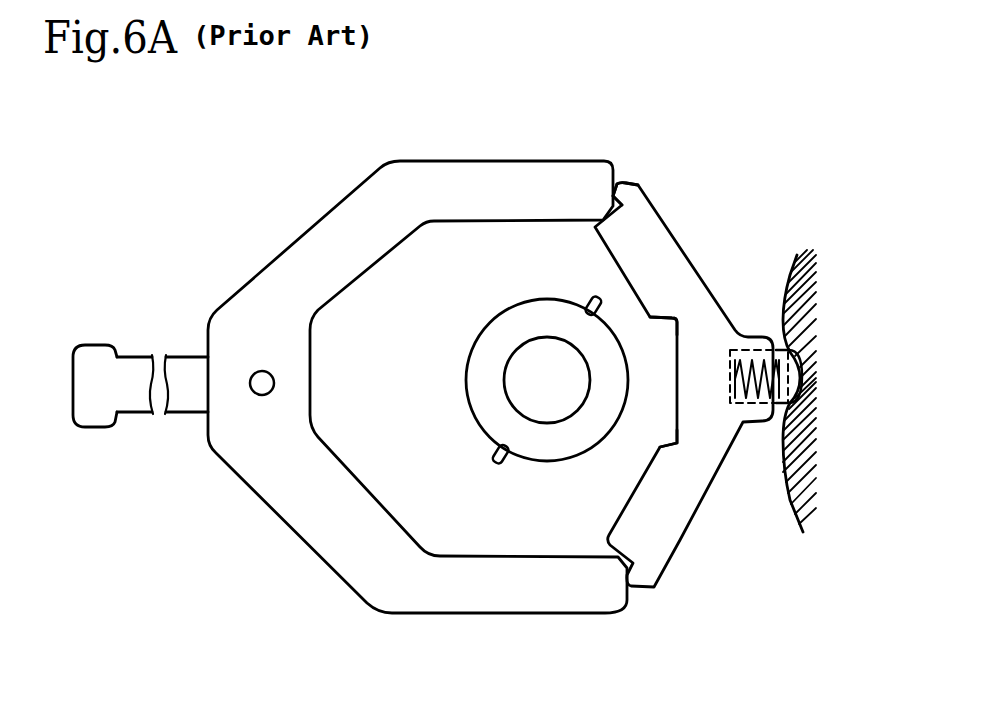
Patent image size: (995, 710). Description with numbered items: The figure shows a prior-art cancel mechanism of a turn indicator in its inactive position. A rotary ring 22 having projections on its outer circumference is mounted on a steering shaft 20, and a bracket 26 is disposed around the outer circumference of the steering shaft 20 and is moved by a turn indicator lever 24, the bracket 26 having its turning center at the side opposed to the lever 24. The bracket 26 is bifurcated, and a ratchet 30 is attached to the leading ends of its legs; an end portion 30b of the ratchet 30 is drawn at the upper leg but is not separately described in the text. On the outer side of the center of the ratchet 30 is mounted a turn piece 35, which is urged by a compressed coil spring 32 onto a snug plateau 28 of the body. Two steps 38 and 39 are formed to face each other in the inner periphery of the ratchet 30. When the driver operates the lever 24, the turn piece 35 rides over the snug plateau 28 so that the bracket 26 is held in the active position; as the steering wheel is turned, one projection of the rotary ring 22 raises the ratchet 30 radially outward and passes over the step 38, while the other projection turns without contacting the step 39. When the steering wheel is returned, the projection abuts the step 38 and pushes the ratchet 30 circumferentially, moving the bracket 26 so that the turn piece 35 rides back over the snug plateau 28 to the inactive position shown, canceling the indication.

The steering shaft 20 is at (557, 410).
The rotary ring 22 is at (484, 432).
The turn indicator lever 24 is at (105, 345).
The bracket 26 is at (588, 160).
The snug plateau 28 is at (784, 462).
The ratchet 30 is at (672, 232).
The hook portion 30b is at (628, 187).
The compressed coil spring 32 is at (760, 402).
The turn piece 35 is at (793, 388).
The step 38 is at (662, 322).
The step 39 is at (663, 435).